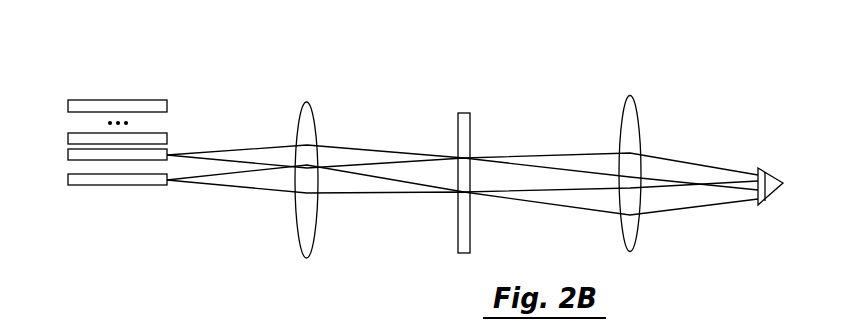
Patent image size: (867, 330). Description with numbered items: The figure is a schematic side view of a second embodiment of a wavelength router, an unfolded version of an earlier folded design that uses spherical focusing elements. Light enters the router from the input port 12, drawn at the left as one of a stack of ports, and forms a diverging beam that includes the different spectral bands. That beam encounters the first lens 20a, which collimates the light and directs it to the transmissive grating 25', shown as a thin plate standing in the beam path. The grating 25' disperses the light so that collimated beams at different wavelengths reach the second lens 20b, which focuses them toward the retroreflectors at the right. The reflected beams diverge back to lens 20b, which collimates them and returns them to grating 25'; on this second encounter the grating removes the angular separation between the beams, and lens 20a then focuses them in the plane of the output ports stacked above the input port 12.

The input port 12 is at (167, 184).
The first lens 20a is at (317, 137).
The transmissive grating 25' is at (494, 162).
The second lens 20b is at (637, 107).